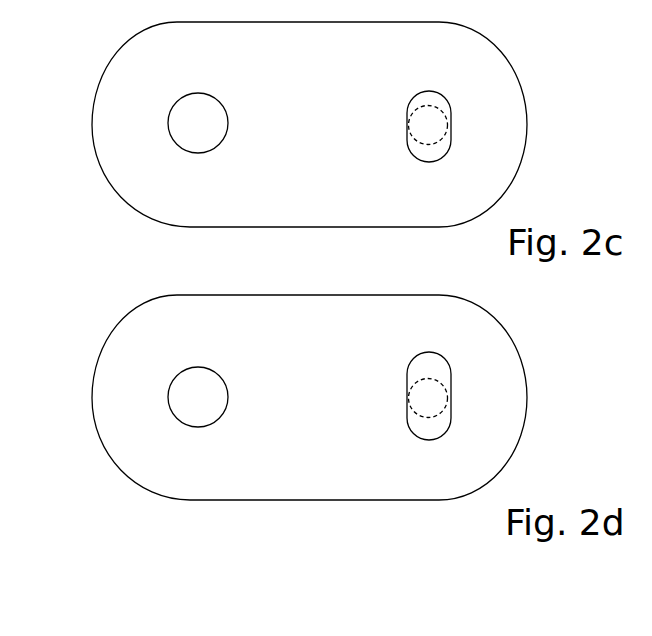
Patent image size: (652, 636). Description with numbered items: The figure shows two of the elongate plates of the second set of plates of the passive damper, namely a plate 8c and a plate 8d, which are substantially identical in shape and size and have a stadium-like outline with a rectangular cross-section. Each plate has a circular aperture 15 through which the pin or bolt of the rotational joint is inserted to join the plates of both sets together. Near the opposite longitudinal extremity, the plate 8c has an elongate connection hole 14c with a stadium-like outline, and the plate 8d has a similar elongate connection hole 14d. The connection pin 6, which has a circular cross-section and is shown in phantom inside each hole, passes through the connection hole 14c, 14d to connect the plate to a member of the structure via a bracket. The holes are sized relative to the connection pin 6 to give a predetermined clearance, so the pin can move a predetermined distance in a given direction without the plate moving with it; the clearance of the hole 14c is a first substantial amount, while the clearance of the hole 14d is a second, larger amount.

In FIG. 2C, the plate 8c is at (168, 62).
In FIG. 2D, the plate 8d is at (157, 350).
In FIG. 2C, the aperture 15 is at (190, 135).
In FIG. 2D, the aperture 15 is at (187, 412).
In FIG. 2C, the elongate connection hole 14c is at (433, 98).
In FIG. 2D, the elongate connection hole 14d is at (433, 358).
In FIG. 2C, the connection pin 6 is at (432, 127).
In FIG. 2D, the connection pin 6 is at (435, 405).